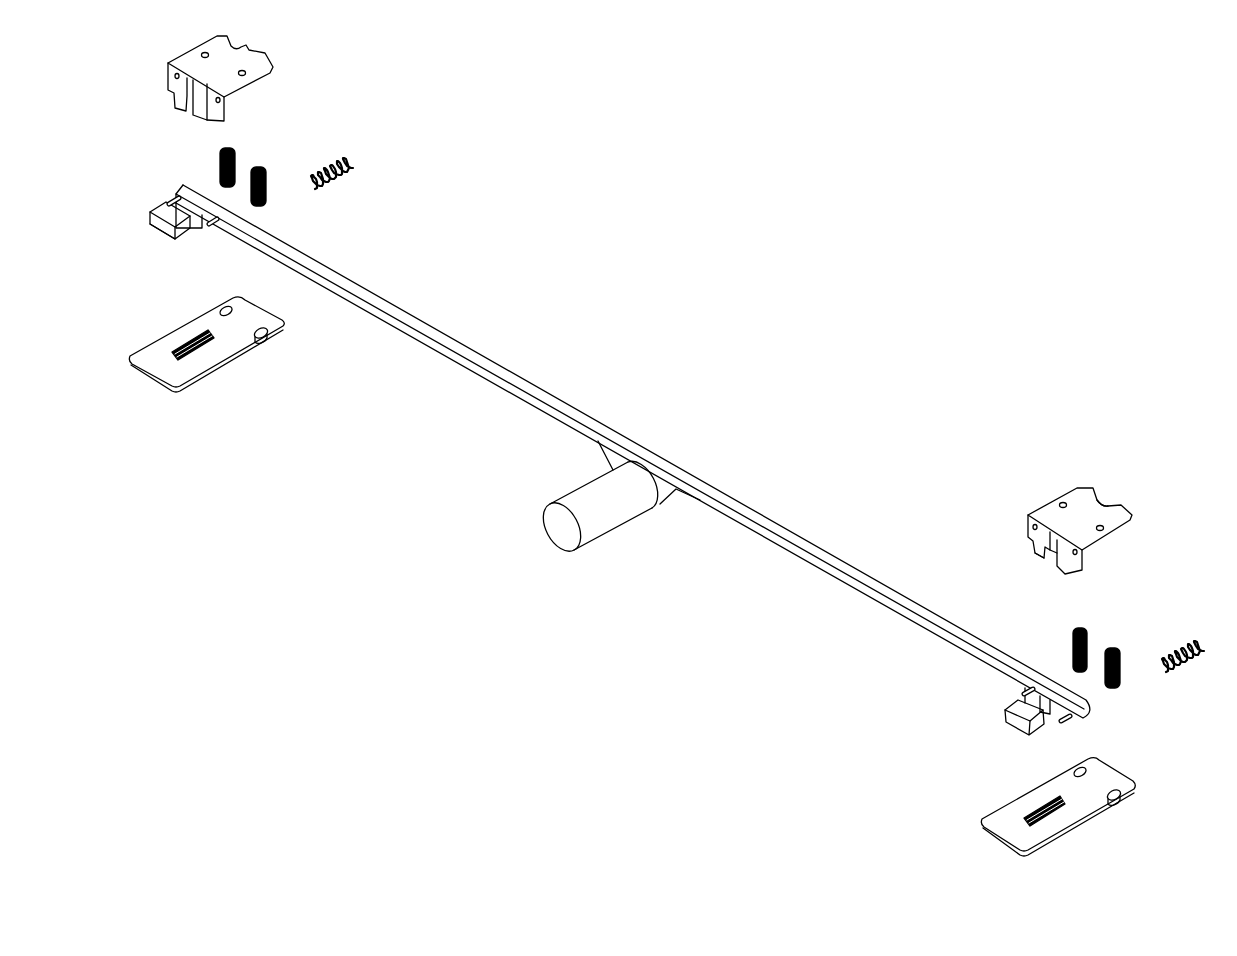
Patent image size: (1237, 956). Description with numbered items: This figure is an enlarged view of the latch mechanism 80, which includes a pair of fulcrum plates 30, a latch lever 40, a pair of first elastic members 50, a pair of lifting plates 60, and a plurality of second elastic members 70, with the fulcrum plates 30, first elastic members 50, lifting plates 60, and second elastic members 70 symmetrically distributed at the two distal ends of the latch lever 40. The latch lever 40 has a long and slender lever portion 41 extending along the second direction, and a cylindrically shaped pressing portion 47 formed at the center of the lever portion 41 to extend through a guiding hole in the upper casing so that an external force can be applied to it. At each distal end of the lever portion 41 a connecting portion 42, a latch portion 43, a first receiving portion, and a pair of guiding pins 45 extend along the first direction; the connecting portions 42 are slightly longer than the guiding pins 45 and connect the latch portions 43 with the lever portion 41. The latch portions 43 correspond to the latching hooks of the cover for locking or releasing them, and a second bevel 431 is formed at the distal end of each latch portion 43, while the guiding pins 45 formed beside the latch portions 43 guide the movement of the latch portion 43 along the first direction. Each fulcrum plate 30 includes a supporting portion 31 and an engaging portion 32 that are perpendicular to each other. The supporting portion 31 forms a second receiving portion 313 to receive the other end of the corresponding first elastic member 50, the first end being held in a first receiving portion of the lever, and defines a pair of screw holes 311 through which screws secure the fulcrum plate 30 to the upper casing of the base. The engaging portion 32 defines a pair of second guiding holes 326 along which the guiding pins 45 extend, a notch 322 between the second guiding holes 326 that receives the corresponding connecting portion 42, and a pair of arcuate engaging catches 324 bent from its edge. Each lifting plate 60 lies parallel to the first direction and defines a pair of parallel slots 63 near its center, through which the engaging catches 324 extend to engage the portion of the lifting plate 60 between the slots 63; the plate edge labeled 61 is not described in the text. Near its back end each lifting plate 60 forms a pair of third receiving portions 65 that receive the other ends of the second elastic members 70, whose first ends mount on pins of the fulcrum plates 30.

The latch mechanism 80 is at (725, 88).
The second elastic members 70 is at (233, 148).
The first elastic members 50 is at (352, 162).
The latch lever 40 is at (538, 366).
The lever portion 41 is at (420, 322).
The pressing portion 47 is at (594, 514).
The latch portions 43 is at (182, 238).
The second bevel 431 is at (152, 219).
The guiding pins 45 is at (170, 198).
The connecting portions 42 is at (193, 221).
The lifting plates 60 is at (218, 372).
The plate edge 61 is at (148, 364).
The slots 63 is at (182, 342).
The third receiving portions 65 is at (266, 343).
The fulcrum plates 30 is at (1140, 496).
The supporting portion 31 is at (1047, 515).
The screw holes 311 is at (1062, 503).
The second receiving portion 313 is at (1103, 505).
The engaging portion 32 is at (1040, 538).
The second guiding holes 326 is at (1033, 525).
The engaging catches 324 is at (1040, 556).
The notch 322 is at (1055, 555).